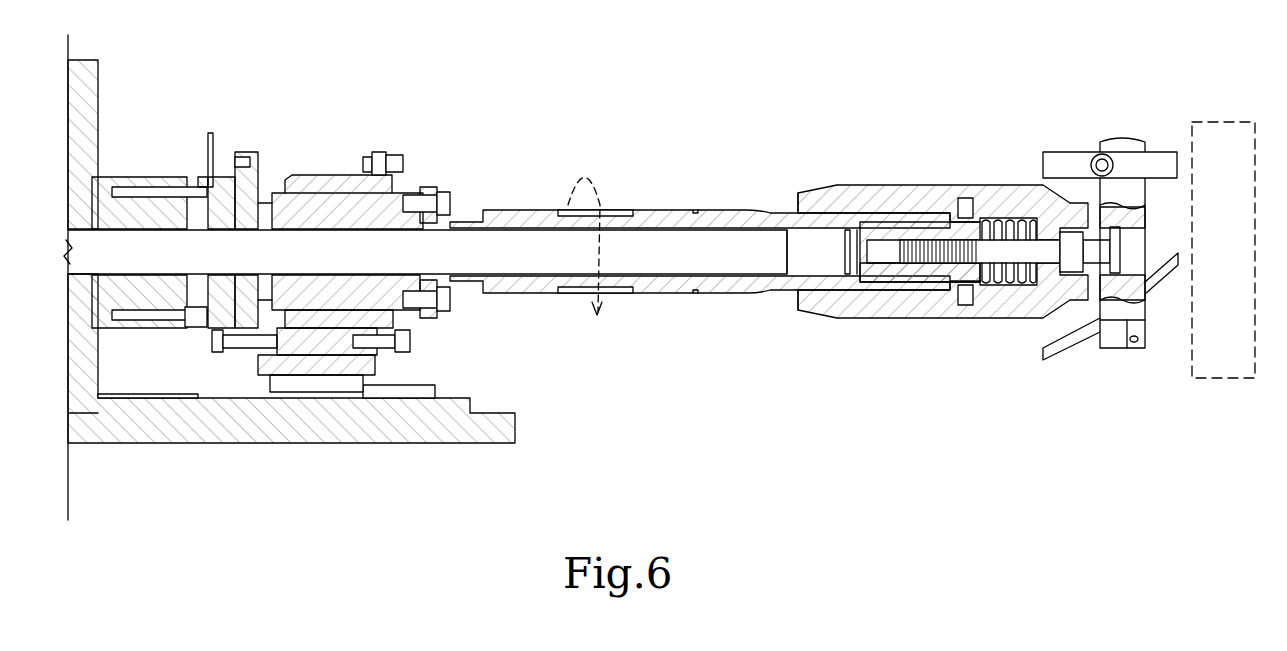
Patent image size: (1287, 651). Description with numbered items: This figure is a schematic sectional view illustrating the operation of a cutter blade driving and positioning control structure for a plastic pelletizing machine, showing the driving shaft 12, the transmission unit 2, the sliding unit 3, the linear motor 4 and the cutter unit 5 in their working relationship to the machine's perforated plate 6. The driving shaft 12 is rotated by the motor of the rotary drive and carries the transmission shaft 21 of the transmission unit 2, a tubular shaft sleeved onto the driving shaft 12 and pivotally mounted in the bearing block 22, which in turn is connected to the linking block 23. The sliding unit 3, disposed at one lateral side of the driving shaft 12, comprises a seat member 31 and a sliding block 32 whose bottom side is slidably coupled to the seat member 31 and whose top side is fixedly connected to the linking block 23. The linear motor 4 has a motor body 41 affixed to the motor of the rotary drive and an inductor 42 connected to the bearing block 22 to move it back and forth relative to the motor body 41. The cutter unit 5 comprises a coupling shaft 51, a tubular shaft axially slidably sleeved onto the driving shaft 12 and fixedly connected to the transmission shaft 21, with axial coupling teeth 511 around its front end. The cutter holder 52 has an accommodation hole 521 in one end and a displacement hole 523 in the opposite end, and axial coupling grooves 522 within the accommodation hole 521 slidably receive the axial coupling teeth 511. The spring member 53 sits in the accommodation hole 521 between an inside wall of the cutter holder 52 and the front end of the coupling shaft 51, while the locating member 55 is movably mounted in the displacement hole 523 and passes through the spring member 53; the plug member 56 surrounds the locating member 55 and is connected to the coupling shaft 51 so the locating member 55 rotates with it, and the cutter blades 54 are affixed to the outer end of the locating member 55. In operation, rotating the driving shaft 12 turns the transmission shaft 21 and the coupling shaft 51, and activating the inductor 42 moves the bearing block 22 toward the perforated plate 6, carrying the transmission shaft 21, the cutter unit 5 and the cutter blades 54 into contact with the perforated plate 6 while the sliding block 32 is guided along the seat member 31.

The transmission unit 2 is at (354, 238).
The sliding unit 3 is at (293, 358).
The linear motor 4 is at (212, 200).
The cutter unit 5 is at (936, 267).
The perforated plate 6 is at (1192, 118).
The driving shaft 12 is at (445, 243).
The transmission shaft 21 is at (385, 218).
The bearing block 22 is at (330, 178).
The linking block 23 is at (262, 183).
The seat member 31 is at (200, 393).
The sliding block 32 is at (345, 380).
The motor body 41 is at (112, 188).
The inductor 42 is at (225, 180).
The coupling shaft 51 is at (700, 252).
The cutter holder 52 is at (891, 228).
The spring member 53 is at (1020, 216).
The cutter blades 54 is at (1060, 163).
The locating member 55 is at (1028, 260).
The plug member 56 is at (878, 272).
The axial coupling teeth 511 is at (787, 282).
The accommodation hole 521 is at (875, 295).
The axial coupling grooves 522 is at (762, 228).
The displacement hole 523 is at (1095, 258).